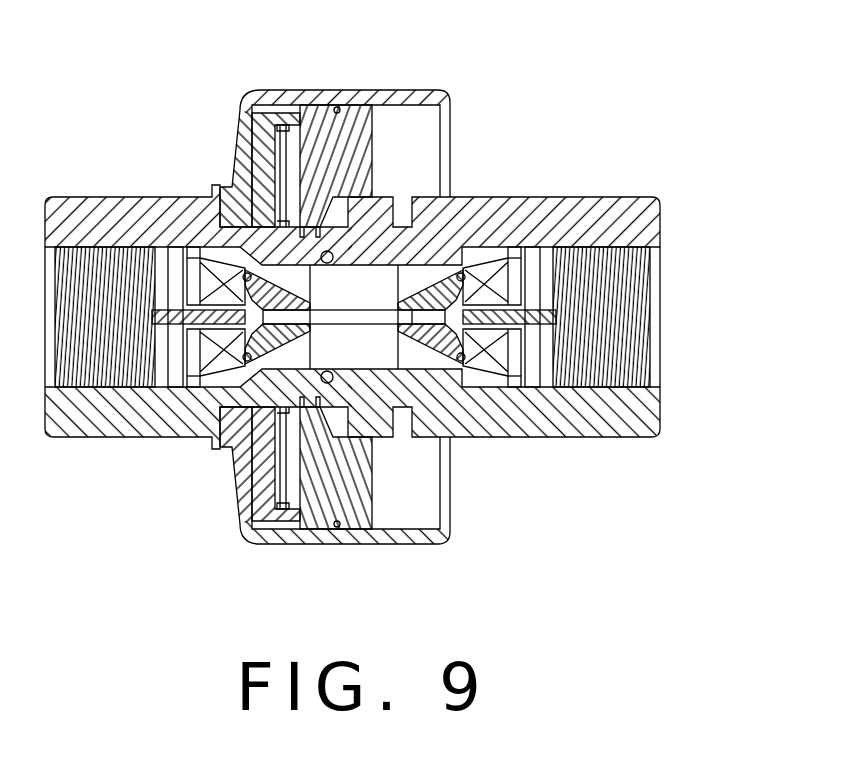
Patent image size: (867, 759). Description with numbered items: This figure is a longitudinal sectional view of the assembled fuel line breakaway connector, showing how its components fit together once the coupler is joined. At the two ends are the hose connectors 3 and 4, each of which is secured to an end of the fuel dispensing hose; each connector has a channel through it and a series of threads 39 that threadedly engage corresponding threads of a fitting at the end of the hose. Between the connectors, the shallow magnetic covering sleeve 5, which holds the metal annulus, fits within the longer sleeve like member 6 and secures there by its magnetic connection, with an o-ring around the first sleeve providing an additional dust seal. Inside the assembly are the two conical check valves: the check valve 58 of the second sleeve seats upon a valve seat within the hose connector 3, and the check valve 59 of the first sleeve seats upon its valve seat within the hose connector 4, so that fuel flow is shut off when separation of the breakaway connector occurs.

The hose connector 3 is at (117, 186).
The hose connector 4 is at (553, 275).
The shallow magnetic covering sleeve 5 is at (273, 517).
The sleeve like member 6 is at (373, 90).
The threads 39 is at (620, 290).
The check valve 58 is at (213, 263).
The check valve 59 is at (465, 285).